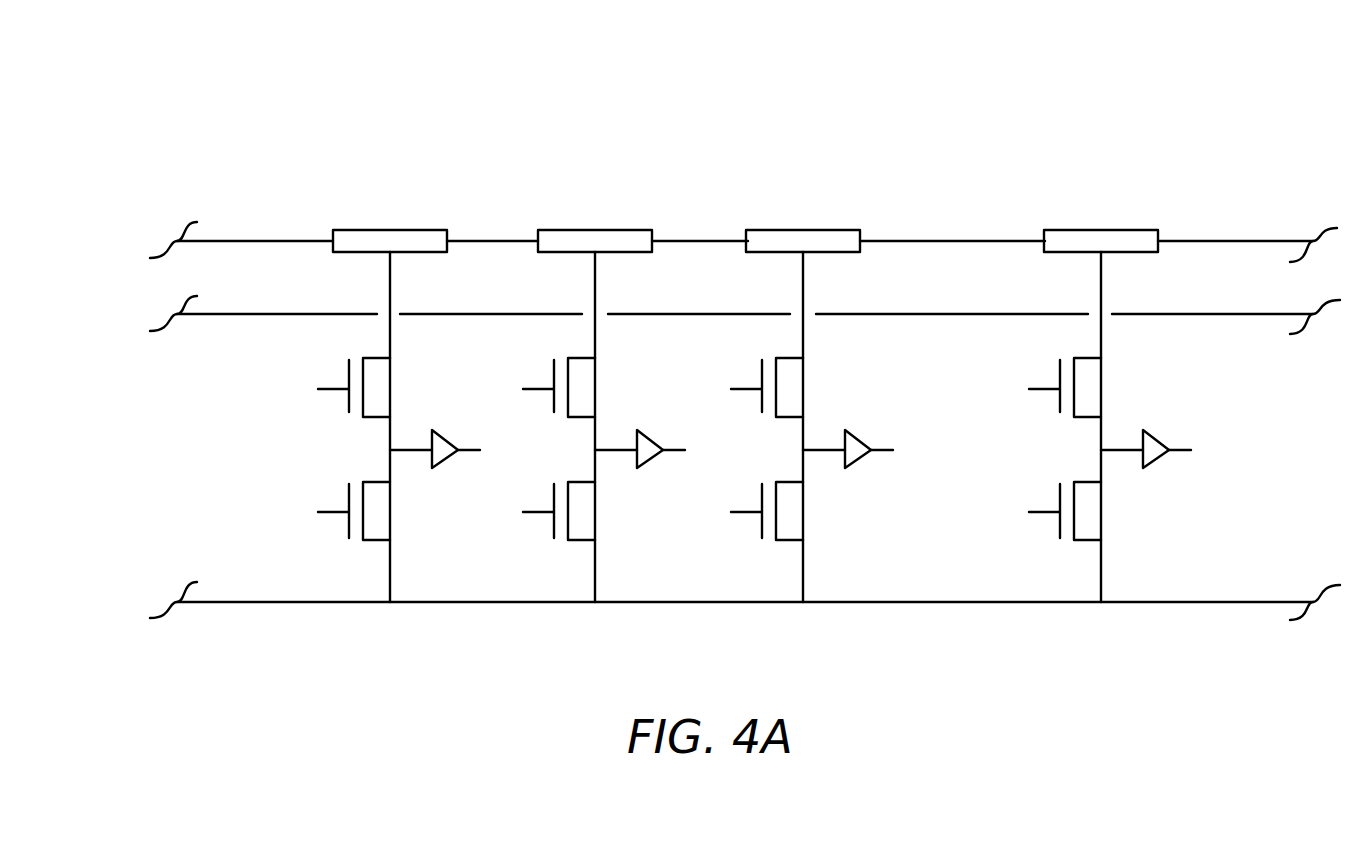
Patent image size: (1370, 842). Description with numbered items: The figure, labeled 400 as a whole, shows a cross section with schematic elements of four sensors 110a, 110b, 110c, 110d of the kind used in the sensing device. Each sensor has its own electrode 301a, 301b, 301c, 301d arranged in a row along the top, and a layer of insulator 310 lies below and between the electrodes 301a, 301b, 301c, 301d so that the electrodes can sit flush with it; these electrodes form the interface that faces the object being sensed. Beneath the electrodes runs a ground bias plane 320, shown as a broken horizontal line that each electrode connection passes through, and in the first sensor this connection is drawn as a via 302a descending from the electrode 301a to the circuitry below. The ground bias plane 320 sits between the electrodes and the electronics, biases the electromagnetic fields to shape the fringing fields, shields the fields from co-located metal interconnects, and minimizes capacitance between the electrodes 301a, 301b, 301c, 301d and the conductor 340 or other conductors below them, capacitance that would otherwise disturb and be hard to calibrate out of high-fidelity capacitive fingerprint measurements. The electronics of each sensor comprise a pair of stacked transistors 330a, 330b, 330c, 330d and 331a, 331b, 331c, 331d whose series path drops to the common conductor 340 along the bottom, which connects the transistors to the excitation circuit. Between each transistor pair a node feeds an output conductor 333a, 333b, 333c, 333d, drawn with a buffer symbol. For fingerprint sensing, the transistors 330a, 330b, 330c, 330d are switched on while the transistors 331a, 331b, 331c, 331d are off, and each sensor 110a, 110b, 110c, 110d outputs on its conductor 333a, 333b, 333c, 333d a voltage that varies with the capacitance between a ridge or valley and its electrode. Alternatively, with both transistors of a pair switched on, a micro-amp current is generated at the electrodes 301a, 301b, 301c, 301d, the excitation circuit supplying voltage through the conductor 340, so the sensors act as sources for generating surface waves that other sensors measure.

The sensor array circuit 400 is at (750, 63).
The insulator 310 is at (168, 279).
The ground bias plane 320 is at (1247, 315).
The conductor 340 is at (260, 602).
The electrode 301a is at (388, 228).
The electrode 301b is at (593, 228).
The electrode 301c is at (801, 228).
The electrode 301d is at (1099, 228).
The via 302a is at (388, 270).
The transistor 330a is at (337, 388).
The transistor 330b is at (540, 388).
The transistor 330c is at (748, 388).
The transistor 330d is at (1046, 388).
The transistor 331a is at (337, 511).
The transistor 331b is at (540, 511).
The transistor 331c is at (748, 511).
The transistor 331d is at (1046, 511).
The conductor 333a is at (408, 448).
The conductor 333b is at (613, 448).
The conductor 333c is at (821, 448).
The conductor 333d is at (1119, 448).
The sensor 110a is at (419, 482).
The sensor 110b is at (624, 482).
The sensor 110c is at (832, 482).
The sensor 110d is at (1130, 482).